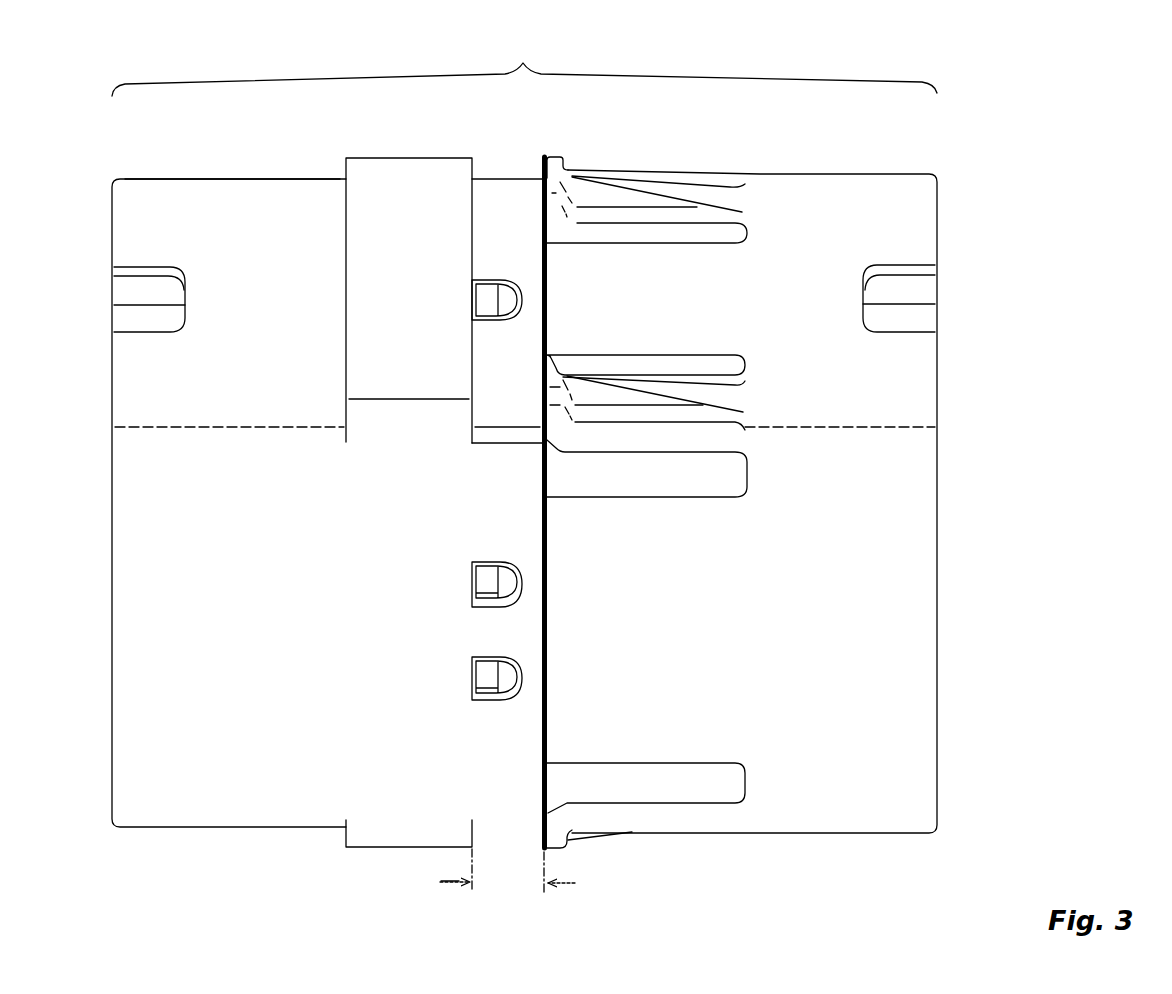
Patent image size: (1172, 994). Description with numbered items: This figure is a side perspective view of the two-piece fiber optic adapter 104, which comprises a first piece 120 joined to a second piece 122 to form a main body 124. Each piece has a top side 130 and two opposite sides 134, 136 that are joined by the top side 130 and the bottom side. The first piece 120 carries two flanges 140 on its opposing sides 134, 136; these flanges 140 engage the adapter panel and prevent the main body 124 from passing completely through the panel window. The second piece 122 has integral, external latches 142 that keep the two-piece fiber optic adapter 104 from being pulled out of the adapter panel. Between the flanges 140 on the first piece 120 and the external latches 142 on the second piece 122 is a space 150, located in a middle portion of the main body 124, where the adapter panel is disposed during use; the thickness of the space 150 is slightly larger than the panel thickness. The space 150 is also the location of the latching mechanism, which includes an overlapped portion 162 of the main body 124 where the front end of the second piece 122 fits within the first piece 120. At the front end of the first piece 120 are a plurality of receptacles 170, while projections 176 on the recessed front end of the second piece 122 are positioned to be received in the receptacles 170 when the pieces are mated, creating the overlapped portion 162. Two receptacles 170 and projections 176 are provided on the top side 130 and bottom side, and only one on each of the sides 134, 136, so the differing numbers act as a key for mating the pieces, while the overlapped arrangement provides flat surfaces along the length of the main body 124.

The two-piece fiber optic adapter 104 is at (972, 115).
The first piece 120 is at (218, 820).
The second piece 122 is at (883, 822).
The main body 124 is at (524, 67).
The top side 130 is at (258, 595).
The side 134 is at (268, 183).
The side 136 is at (864, 233).
The flange 140 is at (408, 167).
The external latch 142 is at (587, 183).
The space 150 is at (542, 150).
The overlapped portion 162 is at (533, 535).
The receptacle 170 is at (520, 285).
The projection 176 is at (500, 303).